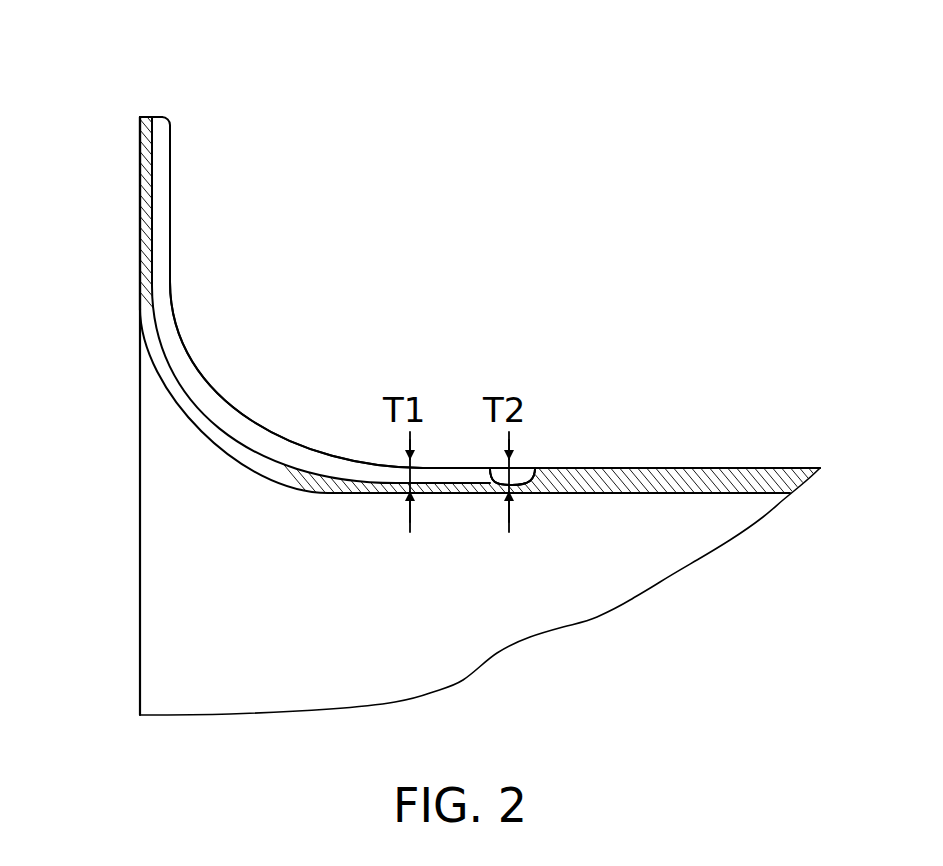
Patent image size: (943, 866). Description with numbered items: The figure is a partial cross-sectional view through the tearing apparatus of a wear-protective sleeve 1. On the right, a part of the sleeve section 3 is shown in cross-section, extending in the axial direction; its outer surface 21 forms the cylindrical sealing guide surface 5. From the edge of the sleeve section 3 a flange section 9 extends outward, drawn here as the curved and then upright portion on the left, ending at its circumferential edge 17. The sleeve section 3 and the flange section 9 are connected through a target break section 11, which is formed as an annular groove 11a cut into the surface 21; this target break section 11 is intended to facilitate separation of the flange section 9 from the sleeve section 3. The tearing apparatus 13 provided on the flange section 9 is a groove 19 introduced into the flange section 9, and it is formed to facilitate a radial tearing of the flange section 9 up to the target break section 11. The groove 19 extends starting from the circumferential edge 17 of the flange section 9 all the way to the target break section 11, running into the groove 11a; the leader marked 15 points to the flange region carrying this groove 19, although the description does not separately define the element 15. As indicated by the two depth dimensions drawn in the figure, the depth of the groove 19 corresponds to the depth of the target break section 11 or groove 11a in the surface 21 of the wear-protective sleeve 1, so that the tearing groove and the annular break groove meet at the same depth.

The wear-protective sleeve 1 is at (595, 193).
The sleeve section 3 is at (648, 482).
The sealing guide surface 5 is at (742, 466).
The flange section 9 is at (145, 266).
The target break section 11 is at (520, 473).
The circumferential groove 11a is at (512, 476).
The tearing apparatus 13 is at (247, 414).
The surface of coating layer 15 is at (307, 433).
The circumferential edge 17 is at (152, 117).
The groove 19 is at (296, 375).
The surface 21 is at (583, 467).